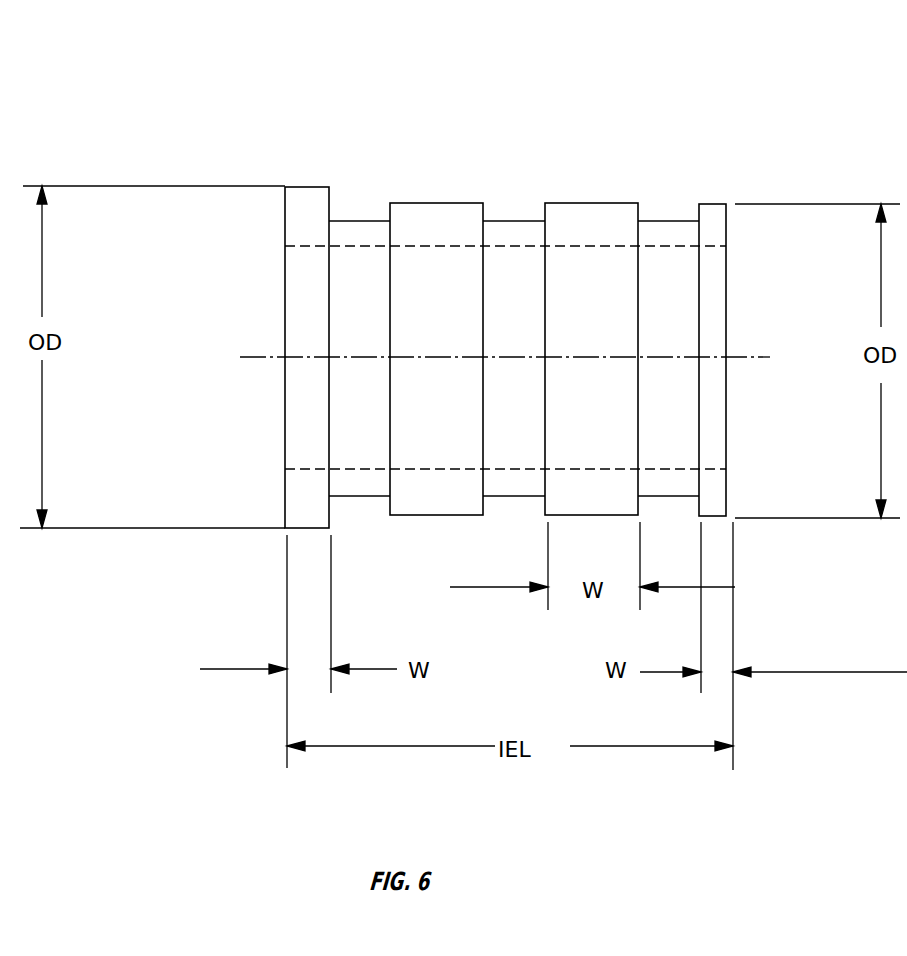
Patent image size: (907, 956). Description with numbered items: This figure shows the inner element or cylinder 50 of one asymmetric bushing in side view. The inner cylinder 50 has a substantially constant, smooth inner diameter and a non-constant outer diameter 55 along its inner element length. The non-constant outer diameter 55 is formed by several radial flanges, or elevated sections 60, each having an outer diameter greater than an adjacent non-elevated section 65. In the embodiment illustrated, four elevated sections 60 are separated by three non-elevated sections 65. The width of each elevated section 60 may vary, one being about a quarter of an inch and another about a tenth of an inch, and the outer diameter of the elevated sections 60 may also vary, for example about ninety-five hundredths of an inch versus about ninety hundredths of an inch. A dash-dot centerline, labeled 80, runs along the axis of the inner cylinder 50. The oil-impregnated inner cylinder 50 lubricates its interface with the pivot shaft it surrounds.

The inner element or cylinder 50 is at (208, 76).
The non-constant outer diameter 55 is at (726, 180).
The elevated section 60 is at (315, 425).
The non-elevated section 65 is at (368, 308).
The central axis 80 is at (268, 357).